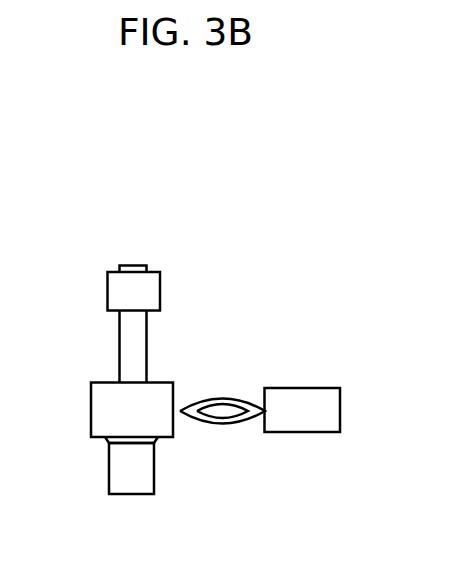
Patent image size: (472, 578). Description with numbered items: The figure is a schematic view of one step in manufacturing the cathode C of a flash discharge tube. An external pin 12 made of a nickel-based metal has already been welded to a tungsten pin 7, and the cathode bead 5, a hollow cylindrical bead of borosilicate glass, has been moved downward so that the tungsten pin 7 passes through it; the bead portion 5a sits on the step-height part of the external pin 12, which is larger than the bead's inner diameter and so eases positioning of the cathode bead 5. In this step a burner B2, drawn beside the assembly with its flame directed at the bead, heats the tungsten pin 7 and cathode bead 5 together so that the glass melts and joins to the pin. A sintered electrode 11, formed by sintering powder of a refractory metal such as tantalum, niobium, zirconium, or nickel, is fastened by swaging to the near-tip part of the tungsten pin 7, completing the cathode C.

The sintered electrode 11 is at (145, 285).
The tungsten pin 7 is at (133, 348).
The holding portion 5a is at (94, 410).
The cathode bead 5 is at (99, 394).
The external pin 12 is at (139, 481).
The cathode C is at (277, 273).
The burner B2 is at (299, 391).